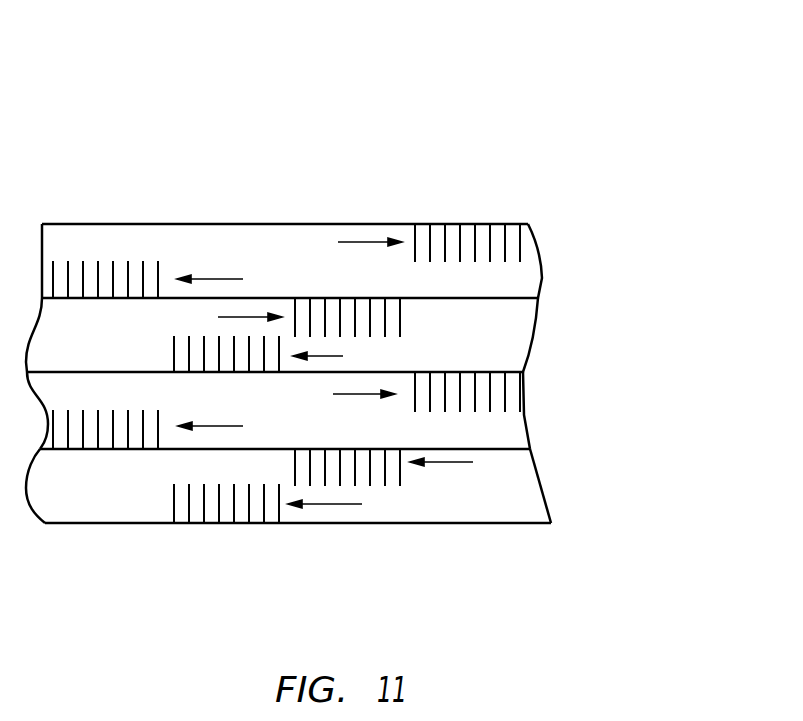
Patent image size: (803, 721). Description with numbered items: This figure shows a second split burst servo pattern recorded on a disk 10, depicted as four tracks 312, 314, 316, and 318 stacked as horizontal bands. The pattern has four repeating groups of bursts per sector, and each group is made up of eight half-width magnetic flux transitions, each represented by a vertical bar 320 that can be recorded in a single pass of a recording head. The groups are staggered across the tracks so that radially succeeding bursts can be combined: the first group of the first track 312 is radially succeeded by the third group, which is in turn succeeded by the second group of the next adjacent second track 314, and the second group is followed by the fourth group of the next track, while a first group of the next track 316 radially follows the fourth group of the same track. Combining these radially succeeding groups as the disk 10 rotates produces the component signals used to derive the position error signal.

The disk 10 is at (321, 97).
The first track 312 is at (598, 261).
The second track 314 is at (598, 336).
The next track 316 is at (598, 410).
The fourth track 318 is at (598, 488).
The vertical bar 320 is at (96, 241).